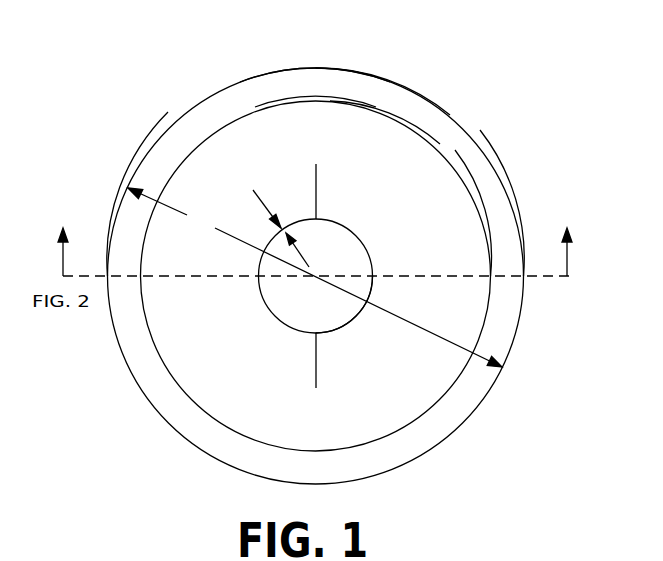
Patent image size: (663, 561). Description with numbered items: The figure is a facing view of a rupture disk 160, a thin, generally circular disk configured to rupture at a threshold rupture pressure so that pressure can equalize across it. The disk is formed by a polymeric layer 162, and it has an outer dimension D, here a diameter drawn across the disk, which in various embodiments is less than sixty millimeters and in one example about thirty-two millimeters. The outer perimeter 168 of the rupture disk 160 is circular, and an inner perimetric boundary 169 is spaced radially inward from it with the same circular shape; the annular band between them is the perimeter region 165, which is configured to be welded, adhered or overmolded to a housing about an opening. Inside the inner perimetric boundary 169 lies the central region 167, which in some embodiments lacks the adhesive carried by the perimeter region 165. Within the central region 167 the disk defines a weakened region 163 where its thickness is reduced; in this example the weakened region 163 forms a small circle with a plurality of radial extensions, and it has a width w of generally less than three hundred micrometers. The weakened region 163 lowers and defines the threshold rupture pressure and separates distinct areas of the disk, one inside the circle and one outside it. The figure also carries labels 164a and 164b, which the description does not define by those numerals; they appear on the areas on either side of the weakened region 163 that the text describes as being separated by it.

The rupture disk 160 is at (150, 68).
The polymeric layer 162 is at (117, 207).
The weakened region 163 is at (415, 277).
The inner flow passage 164a is at (347, 262).
The outer flow passage 164b is at (377, 135).
The perimeter region 165 is at (318, 83).
The central region 167 is at (217, 137).
The outer perimeter 168 is at (387, 75).
The inner perimetric boundary 169 is at (488, 243).
The outer dimension D is at (315, 277).
The width w is at (281, 218).